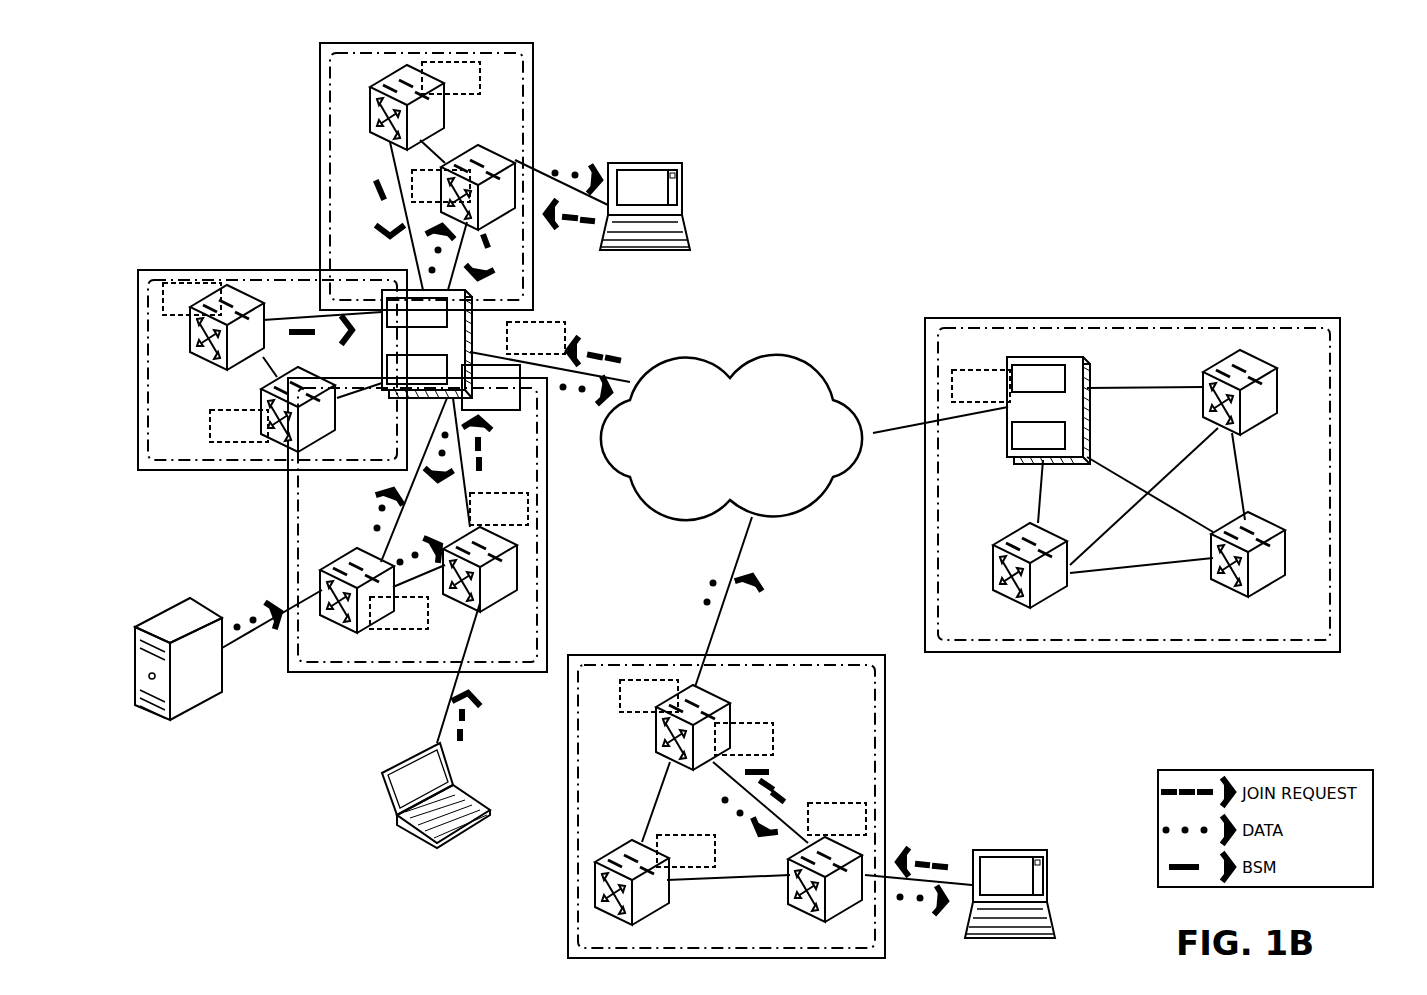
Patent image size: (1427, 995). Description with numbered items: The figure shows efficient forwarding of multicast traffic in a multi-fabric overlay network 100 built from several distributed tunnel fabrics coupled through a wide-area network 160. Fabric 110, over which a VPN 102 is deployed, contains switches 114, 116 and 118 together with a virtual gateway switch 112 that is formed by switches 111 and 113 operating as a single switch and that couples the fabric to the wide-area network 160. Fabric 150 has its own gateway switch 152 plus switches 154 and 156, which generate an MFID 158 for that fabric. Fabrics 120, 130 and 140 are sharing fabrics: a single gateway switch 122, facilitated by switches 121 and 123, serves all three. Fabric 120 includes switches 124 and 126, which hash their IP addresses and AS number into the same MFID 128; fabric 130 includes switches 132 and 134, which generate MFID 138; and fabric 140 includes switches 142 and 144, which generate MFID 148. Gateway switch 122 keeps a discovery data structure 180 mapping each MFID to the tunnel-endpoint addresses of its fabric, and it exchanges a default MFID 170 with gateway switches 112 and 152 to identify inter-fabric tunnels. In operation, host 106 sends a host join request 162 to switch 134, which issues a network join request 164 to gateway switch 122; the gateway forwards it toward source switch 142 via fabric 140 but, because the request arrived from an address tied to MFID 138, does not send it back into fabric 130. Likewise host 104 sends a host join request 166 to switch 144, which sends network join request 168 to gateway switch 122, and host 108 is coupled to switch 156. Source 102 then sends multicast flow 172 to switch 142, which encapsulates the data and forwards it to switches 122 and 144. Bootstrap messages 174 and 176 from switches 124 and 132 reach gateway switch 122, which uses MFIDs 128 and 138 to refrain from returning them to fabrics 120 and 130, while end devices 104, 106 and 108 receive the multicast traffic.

The overlay network 100 is at (1318, 152).
The end device / source 102 is at (1150, 652).
The host 104 is at (467, 792).
The host 106 is at (688, 205).
The host 108 is at (1050, 893).
The distributed tunnel fabric 110 is at (1132, 318).
The switch 111 is at (1027, 388).
The virtual gateway switch (VGS) 112 is at (1028, 416).
The switch 113 is at (1027, 445).
The switch 114 is at (1055, 530).
The switch 116 is at (1282, 403).
The switch 118 is at (1280, 522).
The distributed tunnel fabric 120 is at (266, 270).
The switch 121 is at (405, 322).
The gateway switch 122 is at (405, 349).
The switch 123 is at (405, 379).
The switch 124 is at (190, 328).
The switch 126 is at (340, 412).
The hash value / MFID 128 is at (180, 309).
The distributed tunnel fabric 130 is at (320, 190).
The switch 132 is at (370, 108).
The switch 134 is at (510, 150).
The MFID 138 is at (439, 88).
The distributed tunnel fabric 140 is at (288, 527).
The source switch 142 is at (372, 552).
The requesting switch 144 is at (462, 528).
The MFID 148 is at (487, 519).
The distributed tunnel fabric 150 is at (885, 805).
The gateway switch 152 is at (658, 718).
The switch 154 is at (672, 887).
The requesting switch 156 is at (790, 882).
The MFID 158 is at (732, 749).
The wide-area network (WAN) 160 is at (718, 461).
The host join request 162 is at (556, 222).
The network join request 164 is at (488, 263).
The host join request 166 is at (473, 724).
The network join request 168 is at (482, 460).
The default MFID 170 is at (524, 348).
The multicast flow 172 is at (250, 617).
The BSM 174 is at (317, 337).
The BSM 176 is at (375, 200).
The discovery data structure 180 is at (479, 398).